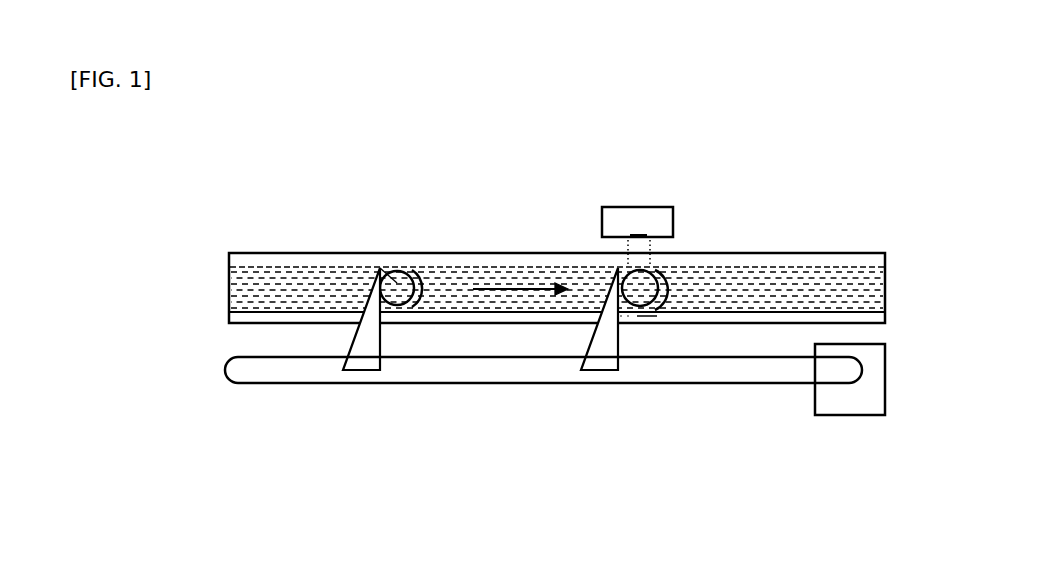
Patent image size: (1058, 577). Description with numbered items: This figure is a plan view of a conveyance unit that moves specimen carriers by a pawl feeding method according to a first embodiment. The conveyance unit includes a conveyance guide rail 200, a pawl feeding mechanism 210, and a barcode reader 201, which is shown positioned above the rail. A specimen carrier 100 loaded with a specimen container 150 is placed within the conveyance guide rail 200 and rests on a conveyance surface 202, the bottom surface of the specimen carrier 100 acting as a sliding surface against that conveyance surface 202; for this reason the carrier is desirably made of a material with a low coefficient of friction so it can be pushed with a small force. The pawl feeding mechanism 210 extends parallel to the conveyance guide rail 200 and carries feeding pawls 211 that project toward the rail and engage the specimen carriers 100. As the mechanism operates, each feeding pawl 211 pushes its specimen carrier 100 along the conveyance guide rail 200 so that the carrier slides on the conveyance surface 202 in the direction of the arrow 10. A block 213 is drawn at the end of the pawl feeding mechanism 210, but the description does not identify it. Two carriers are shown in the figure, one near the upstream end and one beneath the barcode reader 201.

The arrow 10 is at (520, 285).
The specimen carrier 100 is at (416, 270).
The specimen container 150 is at (380, 268).
The conveyance guide rail 200 is at (280, 253).
The barcode reader 201 is at (636, 216).
The conveyance surface 202 is at (818, 268).
The pawl feeding mechanism 210 is at (700, 387).
The feeding pawl 211 is at (350, 368).
The drive unit 213 is at (848, 405).